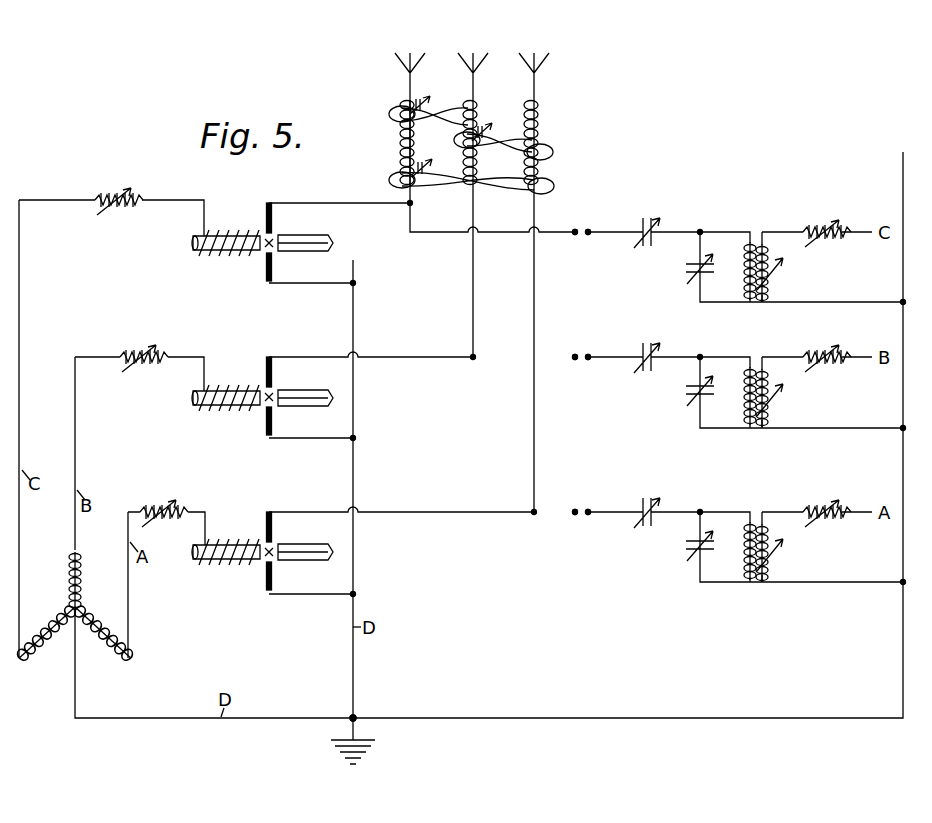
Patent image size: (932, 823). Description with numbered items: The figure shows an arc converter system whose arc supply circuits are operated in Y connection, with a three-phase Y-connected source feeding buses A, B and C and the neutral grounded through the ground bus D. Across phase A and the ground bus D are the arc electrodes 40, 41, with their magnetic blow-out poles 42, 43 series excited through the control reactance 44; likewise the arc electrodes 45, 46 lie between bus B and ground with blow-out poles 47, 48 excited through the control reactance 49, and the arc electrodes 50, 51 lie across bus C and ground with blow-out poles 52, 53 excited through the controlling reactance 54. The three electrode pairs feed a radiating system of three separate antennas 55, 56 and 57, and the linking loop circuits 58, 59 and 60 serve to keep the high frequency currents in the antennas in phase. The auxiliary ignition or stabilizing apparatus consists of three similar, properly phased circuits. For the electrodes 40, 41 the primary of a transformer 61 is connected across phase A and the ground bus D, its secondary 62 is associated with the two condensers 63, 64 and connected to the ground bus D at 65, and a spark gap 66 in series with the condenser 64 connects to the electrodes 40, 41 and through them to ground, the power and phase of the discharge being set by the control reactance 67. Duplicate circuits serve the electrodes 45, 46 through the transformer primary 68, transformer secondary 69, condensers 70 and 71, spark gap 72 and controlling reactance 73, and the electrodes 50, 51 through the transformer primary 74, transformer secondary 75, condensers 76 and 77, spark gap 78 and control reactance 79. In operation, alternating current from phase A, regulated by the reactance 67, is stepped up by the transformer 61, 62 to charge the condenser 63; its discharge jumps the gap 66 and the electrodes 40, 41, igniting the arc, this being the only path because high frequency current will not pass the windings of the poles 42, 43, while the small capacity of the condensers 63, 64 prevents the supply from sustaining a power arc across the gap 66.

The arc electrode 40 is at (290, 550).
The arc electrode 41 is at (273, 576).
The magnetic blow-out pole 42 is at (223, 528).
The magnetic blow-out pole 43 is at (325, 542).
The control reactance 44 is at (156, 505).
The arc electrode 45 is at (290, 396).
The arc electrode 46 is at (272, 422).
The magnetic blow-out pole 47 is at (218, 380).
The magnetic blow-out pole 48 is at (323, 390).
The control reactance 49 is at (130, 351).
The arc electrode 50 is at (291, 242).
The arc electrode 51 is at (272, 270).
The magnetic blow-out pole 52 is at (217, 236).
The magnetic blow-out pole 53 is at (326, 235).
The controlling reactance 54 is at (116, 195).
The antenna 55 is at (544, 64).
The antenna 56 is at (480, 66).
The antenna 57 is at (416, 64).
The linking loop circuit 58 is at (550, 140).
The linking loop circuit 59 is at (514, 188).
The linking loop circuit 60 is at (389, 112).
The transformer primary 61 is at (768, 555).
The transformer secondary 62 is at (745, 516).
The condenser 63 is at (680, 558).
The condenser 64 is at (643, 504).
The ground connection 65 is at (355, 716).
The spark gap 66 is at (583, 522).
The control reactance 67 is at (815, 511).
The transformer primary 68 is at (770, 400).
The transformer secondary 69 is at (744, 398).
The condenser 70 is at (690, 398).
The condenser 71 is at (643, 348).
The spark gap 72 is at (586, 362).
The controlling reactance 73 is at (816, 355).
The transformer primary 74 is at (770, 266).
The transformer secondary 75 is at (744, 274).
The condenser 76 is at (686, 275).
The condenser 77 is at (643, 222).
The spark gap 78 is at (585, 240).
The control reactance 79 is at (814, 230).